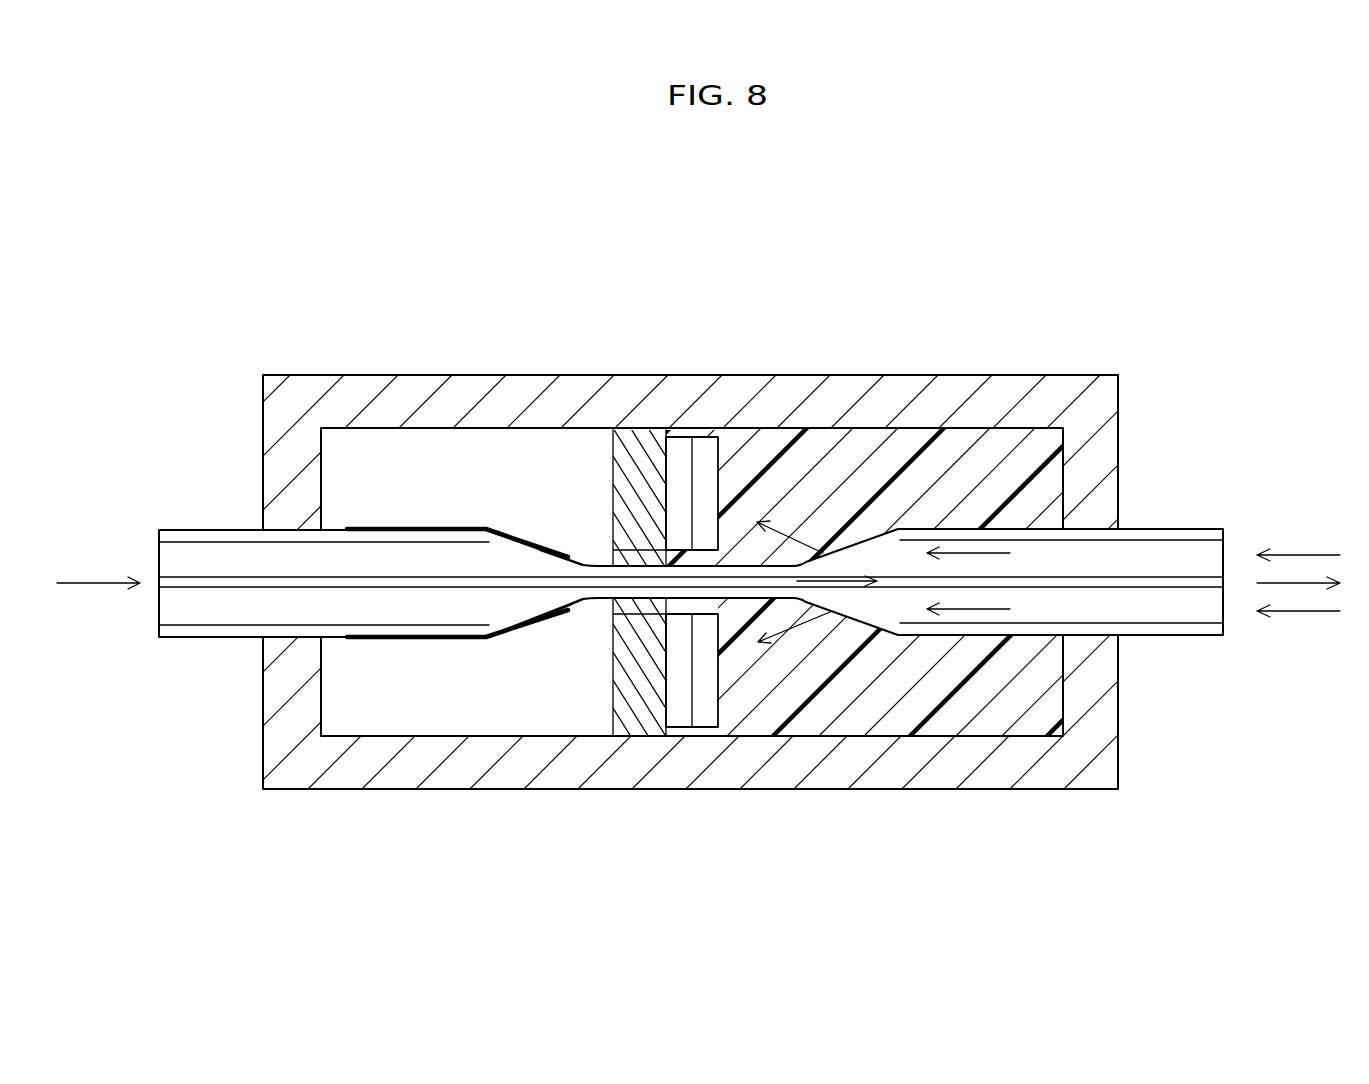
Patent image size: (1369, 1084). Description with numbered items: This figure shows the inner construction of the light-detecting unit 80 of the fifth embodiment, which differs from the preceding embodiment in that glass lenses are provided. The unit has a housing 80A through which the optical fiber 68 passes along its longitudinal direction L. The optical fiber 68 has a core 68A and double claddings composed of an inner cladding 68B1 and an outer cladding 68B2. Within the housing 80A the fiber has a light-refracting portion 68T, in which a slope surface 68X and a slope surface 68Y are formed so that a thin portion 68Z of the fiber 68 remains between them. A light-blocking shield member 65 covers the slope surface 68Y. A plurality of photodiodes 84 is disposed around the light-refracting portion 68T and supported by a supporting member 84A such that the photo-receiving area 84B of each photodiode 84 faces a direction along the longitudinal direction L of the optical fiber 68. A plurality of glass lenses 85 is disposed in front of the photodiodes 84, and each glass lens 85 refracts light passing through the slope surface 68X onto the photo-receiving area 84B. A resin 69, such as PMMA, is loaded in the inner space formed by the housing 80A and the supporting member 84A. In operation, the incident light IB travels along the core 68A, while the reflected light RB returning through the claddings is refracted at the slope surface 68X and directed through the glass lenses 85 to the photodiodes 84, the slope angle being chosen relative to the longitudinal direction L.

The light-detecting unit 80 is at (937, 338).
The housing 80A is at (1063, 375).
The optical fiber 68 is at (1170, 515).
The core 68A is at (162, 582).
The inner cladding 68B1 is at (213, 607).
The outer cladding 68B2 is at (160, 630).
The photodiodes 84 is at (656, 584).
The supporting member 84A is at (642, 468).
The photo-receiving area 84B is at (708, 467).
The glass lenses 85 is at (723, 460).
The resin 69 is at (925, 695).
The shield member 65 is at (532, 623).
The slope surface 68Y is at (578, 603).
The light-refracting portion 68T is at (745, 560).
The slope surface 68X is at (846, 542).
The thin portion 68Z is at (743, 603).
The reflected light RB is at (973, 555).
The incident light IB is at (850, 582).
The longitudinal direction L is at (1313, 583).